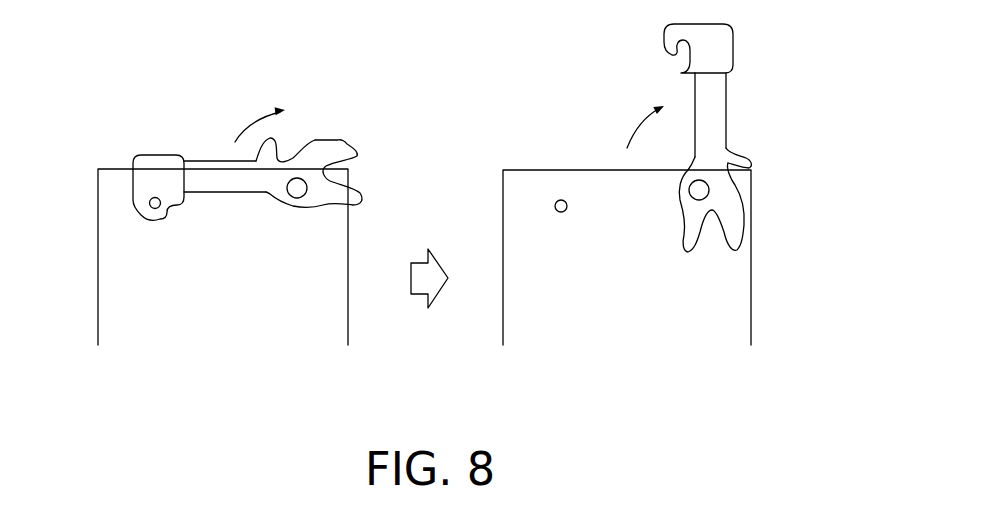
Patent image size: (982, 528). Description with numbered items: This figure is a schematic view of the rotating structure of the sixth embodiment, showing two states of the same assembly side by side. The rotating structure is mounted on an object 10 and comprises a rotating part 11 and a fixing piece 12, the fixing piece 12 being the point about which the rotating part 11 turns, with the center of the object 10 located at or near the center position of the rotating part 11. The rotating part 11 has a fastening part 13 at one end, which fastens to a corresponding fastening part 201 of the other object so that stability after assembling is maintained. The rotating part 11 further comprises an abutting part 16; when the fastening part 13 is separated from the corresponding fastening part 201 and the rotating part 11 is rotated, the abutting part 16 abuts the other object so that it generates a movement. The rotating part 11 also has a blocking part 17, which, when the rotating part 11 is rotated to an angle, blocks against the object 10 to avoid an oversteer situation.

The object 10 is at (107, 254).
The rotating part 11 is at (222, 160).
The fixing piece 12 is at (296, 198).
The fastening part 13 is at (152, 160).
The abutting part 16 is at (342, 142).
The blocking part 17 is at (281, 141).
The corresponding fastening part 201 is at (159, 207).